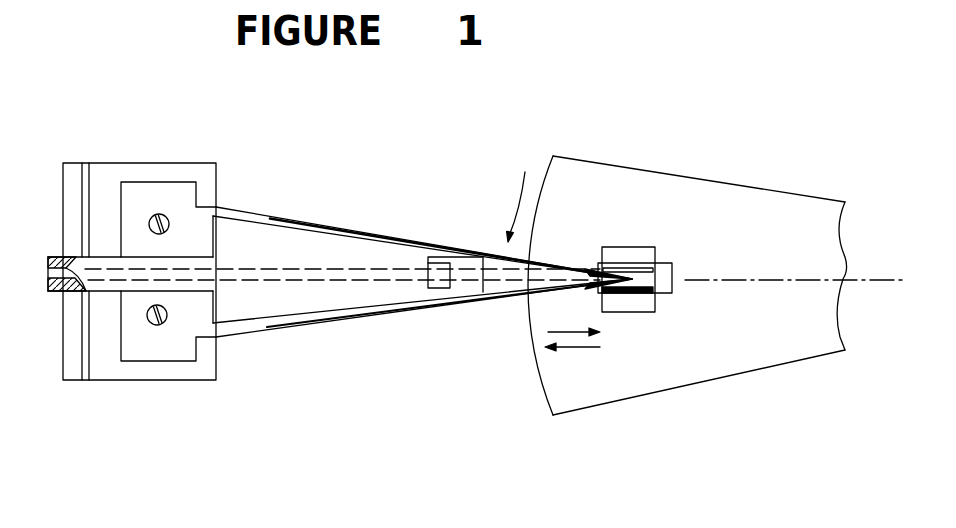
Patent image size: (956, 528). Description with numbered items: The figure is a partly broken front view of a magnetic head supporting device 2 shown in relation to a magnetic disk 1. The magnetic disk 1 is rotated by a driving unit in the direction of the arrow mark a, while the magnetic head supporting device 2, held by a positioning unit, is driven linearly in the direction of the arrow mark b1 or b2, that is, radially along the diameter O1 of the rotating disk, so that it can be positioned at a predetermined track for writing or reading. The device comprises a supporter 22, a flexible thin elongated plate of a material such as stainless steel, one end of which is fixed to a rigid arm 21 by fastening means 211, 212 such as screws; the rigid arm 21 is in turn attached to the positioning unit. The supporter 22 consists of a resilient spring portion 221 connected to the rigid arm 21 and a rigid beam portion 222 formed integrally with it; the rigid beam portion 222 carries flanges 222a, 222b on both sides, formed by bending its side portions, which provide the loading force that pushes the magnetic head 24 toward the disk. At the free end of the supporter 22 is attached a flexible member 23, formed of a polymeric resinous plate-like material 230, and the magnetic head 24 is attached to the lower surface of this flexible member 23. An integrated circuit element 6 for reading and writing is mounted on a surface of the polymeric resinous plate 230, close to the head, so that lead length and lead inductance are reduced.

The magnetic disk 1 is at (708, 368).
The magnetic head supporting device 2 is at (290, 134).
The integrated circuit element 6 is at (428, 265).
The rigid arm 21 is at (159, 172).
The supporter 22 is at (336, 221).
The flexible member 23 is at (636, 274).
The magnetic head 24 is at (643, 256).
The fastening means 211 is at (149, 221).
The fastening means 212 is at (151, 326).
The resilient spring portion 221 is at (250, 334).
The rigid beam portion 222 is at (449, 274).
The flange 222a is at (445, 245).
The flange 222b is at (460, 303).
The polymeric resinous plate-like material 230 is at (313, 295).
The diameter O1 is at (855, 278).
The arrow mark a is at (512, 205).
The arrow mark b1 is at (563, 332).
The arrow mark b2 is at (570, 350).